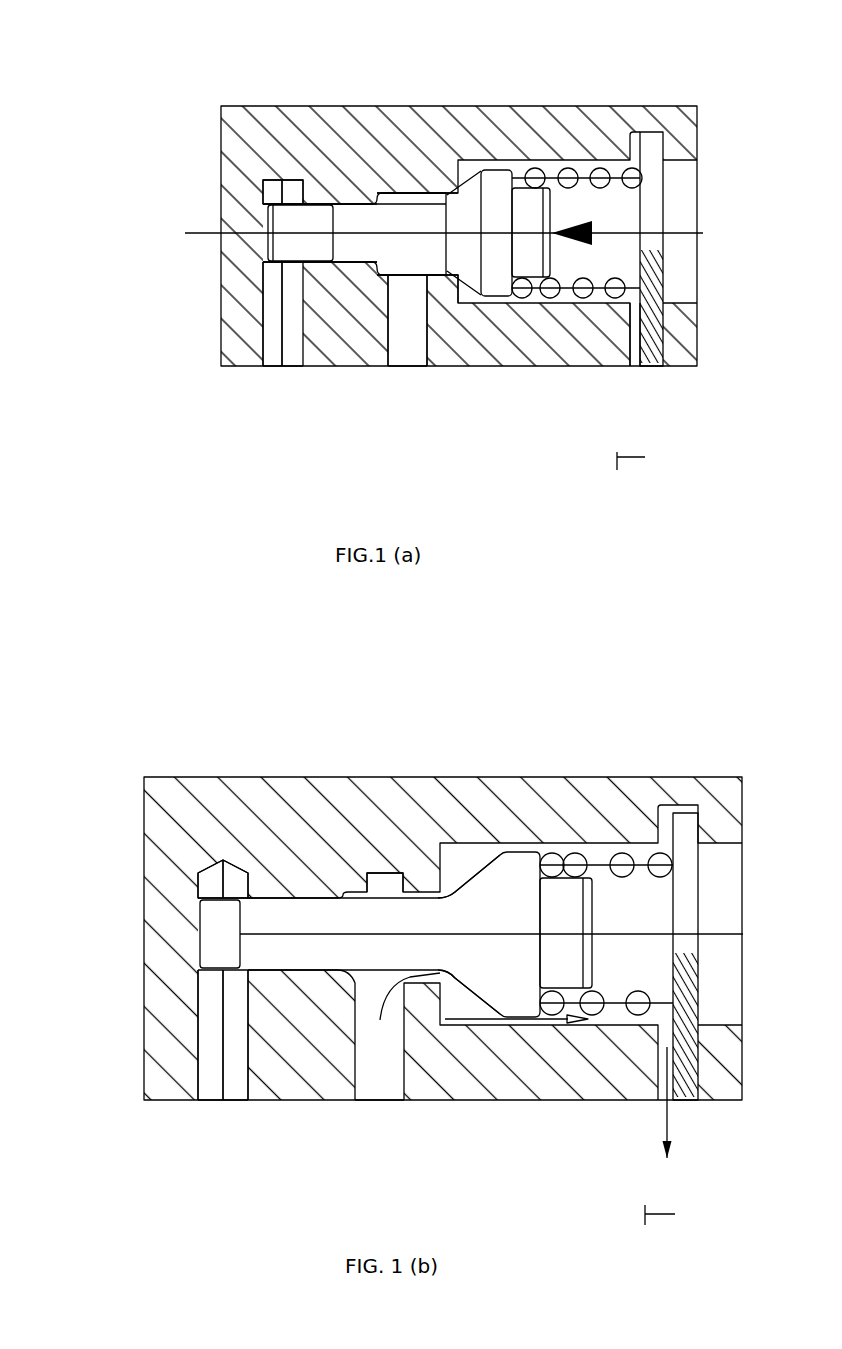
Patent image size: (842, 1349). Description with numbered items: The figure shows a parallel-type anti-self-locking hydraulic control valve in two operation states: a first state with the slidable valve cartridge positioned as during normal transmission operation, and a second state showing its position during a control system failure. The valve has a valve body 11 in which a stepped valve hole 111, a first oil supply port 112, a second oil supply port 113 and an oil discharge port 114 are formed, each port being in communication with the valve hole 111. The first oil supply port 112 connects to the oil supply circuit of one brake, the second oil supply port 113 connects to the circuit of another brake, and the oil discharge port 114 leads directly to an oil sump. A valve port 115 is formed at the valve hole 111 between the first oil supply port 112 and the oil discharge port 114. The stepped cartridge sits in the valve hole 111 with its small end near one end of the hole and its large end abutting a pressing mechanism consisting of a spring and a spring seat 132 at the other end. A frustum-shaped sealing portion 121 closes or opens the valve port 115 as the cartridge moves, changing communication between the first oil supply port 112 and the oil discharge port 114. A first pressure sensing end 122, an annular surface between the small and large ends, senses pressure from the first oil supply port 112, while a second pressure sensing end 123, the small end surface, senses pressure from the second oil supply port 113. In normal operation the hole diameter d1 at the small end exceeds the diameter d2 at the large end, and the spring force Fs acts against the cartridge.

The valve body 11 is at (245, 103).
The valve hole 111 is at (310, 200).
The first oil supply port 112 is at (410, 355).
The second oil supply port 113 is at (275, 368).
The oil discharge port 114 is at (635, 332).
The valve port 115 is at (452, 188).
The sealing portion 121 is at (472, 878).
The first pressure sensing end 122 is at (427, 887).
The second pressure sensing end 123 is at (236, 913).
The spring seat 132 is at (653, 150).
The diameter of the valve hole at the small end of the cartridge d1 is at (440, 240).
The diameter of the valve hole at the large end of the cartridge d2 is at (330, 222).
The spring force Fs is at (609, 222).